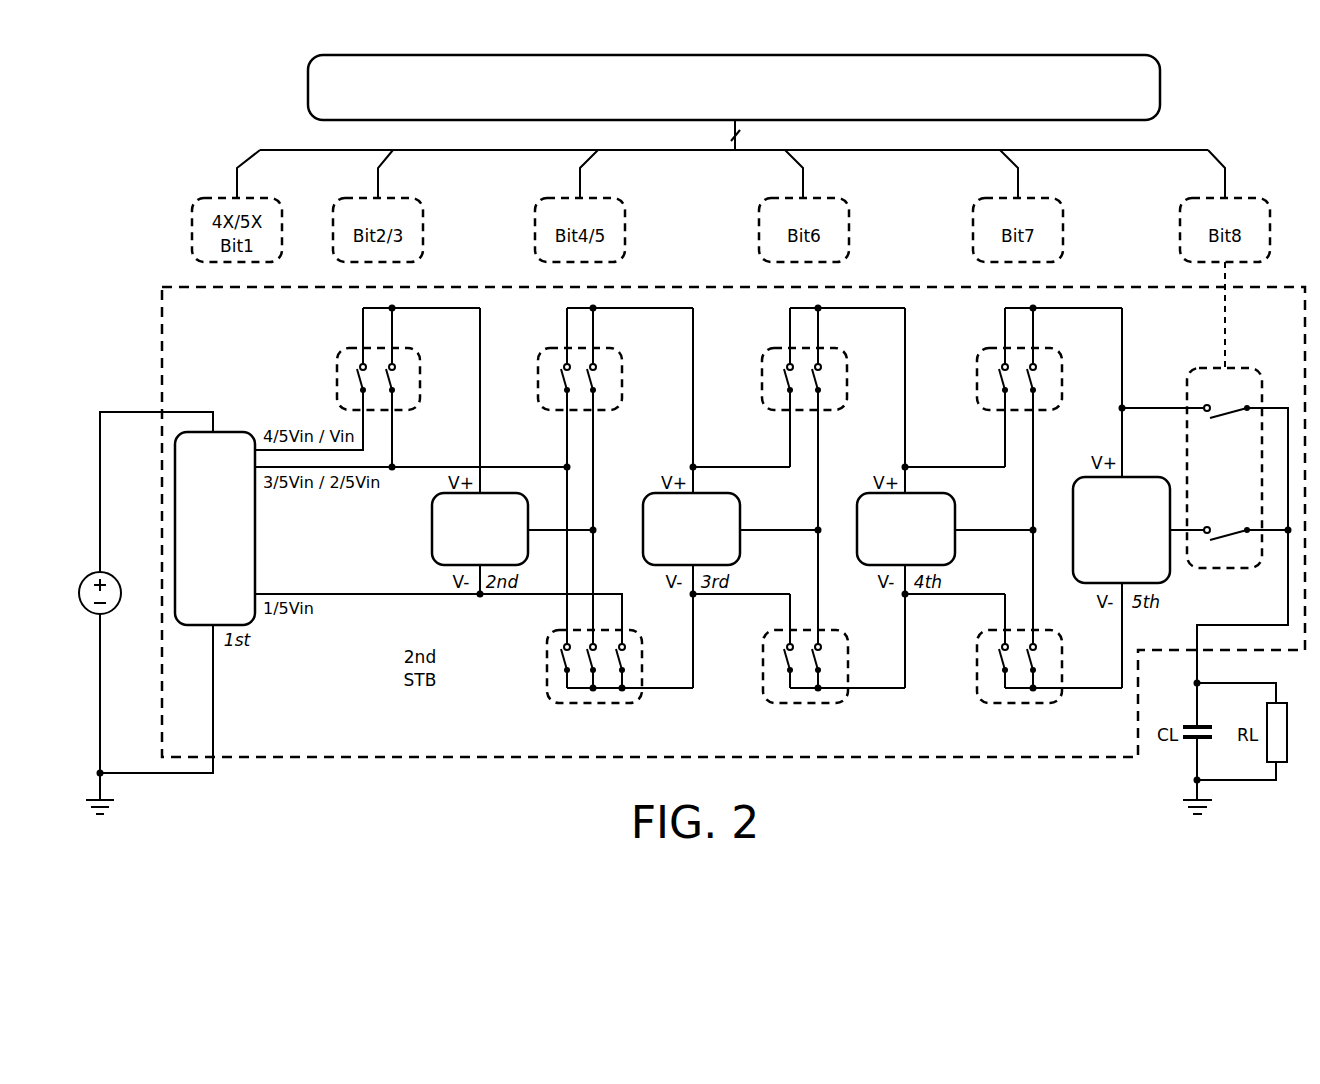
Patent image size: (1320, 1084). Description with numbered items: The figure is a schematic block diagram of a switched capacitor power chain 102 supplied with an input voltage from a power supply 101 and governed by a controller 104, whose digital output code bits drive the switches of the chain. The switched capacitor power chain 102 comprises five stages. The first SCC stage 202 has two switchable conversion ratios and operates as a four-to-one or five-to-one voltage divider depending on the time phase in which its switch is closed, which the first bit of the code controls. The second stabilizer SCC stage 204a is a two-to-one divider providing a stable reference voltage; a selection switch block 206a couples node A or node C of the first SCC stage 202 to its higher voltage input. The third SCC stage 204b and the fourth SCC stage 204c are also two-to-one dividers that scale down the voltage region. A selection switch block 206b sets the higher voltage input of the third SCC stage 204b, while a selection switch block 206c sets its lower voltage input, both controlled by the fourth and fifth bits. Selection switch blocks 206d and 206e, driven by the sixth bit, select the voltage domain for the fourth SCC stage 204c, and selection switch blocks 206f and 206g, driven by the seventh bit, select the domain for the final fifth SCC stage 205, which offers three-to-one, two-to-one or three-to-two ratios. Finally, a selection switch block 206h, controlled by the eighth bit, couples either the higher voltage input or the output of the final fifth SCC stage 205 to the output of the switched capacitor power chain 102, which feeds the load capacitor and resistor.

The power supply 101 is at (121, 606).
The switched capacitor power chain 102 is at (317, 758).
The controller 104 is at (308, 88).
The first SCC stage 202 is at (197, 432).
The second stabilizer SCC stage 204a is at (432, 530).
The third SCC stage 204b is at (660, 493).
The fourth SCC stage 204c is at (872, 493).
The final fifth SCC stage 205 is at (1087, 477).
The selection switch block 206a is at (346, 352).
The selection switch block 206b is at (548, 352).
The selection switch block 206c is at (552, 695).
The selection switch block 206d is at (772, 352).
The selection switch block 206e is at (768, 695).
The selection switch block 206f is at (987, 352).
The selection switch block 206g is at (981, 695).
The selection switch block 206h is at (1212, 368).